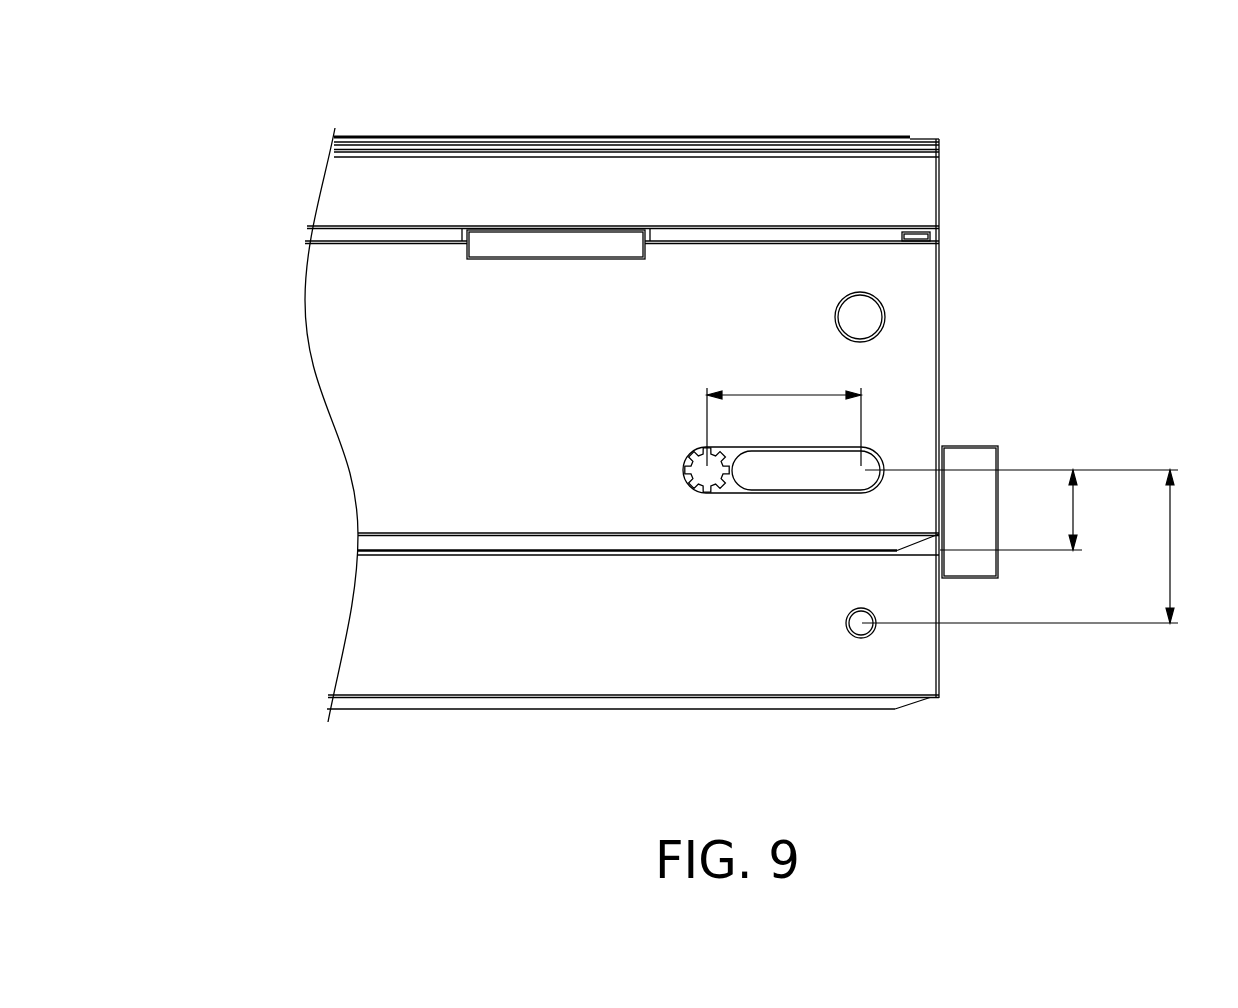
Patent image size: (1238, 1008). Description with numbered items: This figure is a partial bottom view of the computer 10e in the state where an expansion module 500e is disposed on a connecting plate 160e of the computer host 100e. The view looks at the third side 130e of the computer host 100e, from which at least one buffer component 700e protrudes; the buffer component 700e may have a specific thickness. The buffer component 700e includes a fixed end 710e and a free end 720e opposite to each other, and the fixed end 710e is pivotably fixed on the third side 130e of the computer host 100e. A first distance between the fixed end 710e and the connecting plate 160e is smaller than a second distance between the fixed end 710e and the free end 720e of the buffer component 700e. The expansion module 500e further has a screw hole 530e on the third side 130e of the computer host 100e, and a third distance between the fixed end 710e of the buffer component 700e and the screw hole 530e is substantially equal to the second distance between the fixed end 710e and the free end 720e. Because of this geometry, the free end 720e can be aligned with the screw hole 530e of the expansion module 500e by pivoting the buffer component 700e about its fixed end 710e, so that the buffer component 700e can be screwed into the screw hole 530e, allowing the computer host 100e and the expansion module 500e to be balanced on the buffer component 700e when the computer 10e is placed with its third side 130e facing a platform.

The computer 10e is at (170, 71).
The computer host 100e is at (250, 275).
The third side 130e is at (917, 271).
The connecting plate 160e is at (358, 551).
The expansion module 500e is at (398, 653).
The screw hole 530e is at (862, 630).
The buffer component 700e is at (634, 459).
The fixed end 710e is at (883, 458).
The free end 720e is at (684, 456).